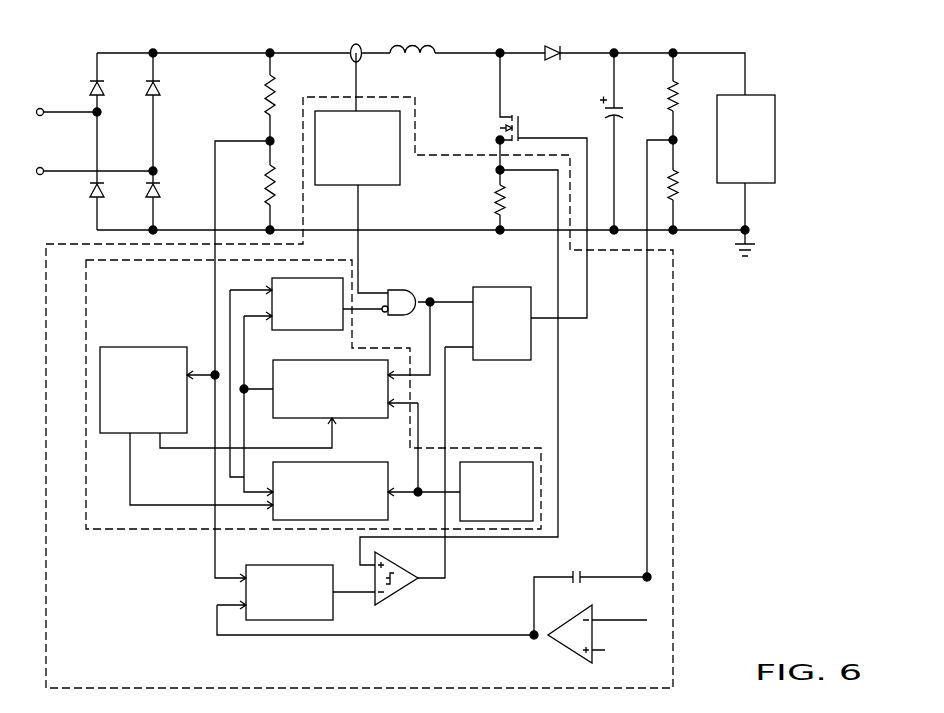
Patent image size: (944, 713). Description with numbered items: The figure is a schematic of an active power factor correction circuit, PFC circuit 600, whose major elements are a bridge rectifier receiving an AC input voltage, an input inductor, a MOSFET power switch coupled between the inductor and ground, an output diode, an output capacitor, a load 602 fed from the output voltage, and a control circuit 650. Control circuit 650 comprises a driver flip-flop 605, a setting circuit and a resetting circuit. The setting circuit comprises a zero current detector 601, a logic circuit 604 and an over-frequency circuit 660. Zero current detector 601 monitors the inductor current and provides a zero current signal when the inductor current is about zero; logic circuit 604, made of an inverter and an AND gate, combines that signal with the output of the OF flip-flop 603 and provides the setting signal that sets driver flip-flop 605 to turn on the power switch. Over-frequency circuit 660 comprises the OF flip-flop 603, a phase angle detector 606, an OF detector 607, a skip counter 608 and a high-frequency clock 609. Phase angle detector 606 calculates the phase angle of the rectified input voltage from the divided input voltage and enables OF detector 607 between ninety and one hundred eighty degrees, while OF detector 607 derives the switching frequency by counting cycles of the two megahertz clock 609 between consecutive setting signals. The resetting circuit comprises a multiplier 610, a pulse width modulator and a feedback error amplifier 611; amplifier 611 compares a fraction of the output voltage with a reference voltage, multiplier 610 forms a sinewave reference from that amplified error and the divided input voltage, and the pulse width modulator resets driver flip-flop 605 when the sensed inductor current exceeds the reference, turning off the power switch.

The PFC circuit 600 is at (853, 556).
The zero current detector 601 is at (373, 185).
The load 602 is at (758, 183).
The OF flip-flop 603 is at (345, 321).
The logic circuit 604 is at (400, 290).
The driver flip-flop 605 is at (512, 360).
The phase angle detector 606 is at (140, 347).
The OF detector 607 is at (362, 418).
The skip counter 608 is at (323, 520).
The high-frequency clock 609 is at (503, 462).
The multiplier 610 is at (267, 565).
The feedback error amplifier 611 is at (560, 640).
The control circuit 650 is at (674, 425).
The over-frequency circuit 660 is at (112, 530).